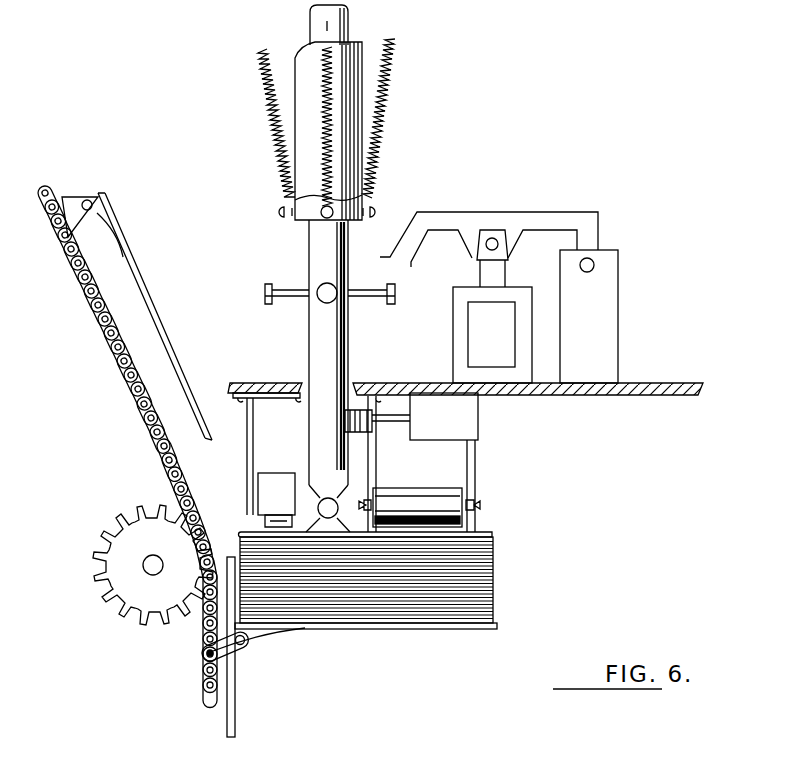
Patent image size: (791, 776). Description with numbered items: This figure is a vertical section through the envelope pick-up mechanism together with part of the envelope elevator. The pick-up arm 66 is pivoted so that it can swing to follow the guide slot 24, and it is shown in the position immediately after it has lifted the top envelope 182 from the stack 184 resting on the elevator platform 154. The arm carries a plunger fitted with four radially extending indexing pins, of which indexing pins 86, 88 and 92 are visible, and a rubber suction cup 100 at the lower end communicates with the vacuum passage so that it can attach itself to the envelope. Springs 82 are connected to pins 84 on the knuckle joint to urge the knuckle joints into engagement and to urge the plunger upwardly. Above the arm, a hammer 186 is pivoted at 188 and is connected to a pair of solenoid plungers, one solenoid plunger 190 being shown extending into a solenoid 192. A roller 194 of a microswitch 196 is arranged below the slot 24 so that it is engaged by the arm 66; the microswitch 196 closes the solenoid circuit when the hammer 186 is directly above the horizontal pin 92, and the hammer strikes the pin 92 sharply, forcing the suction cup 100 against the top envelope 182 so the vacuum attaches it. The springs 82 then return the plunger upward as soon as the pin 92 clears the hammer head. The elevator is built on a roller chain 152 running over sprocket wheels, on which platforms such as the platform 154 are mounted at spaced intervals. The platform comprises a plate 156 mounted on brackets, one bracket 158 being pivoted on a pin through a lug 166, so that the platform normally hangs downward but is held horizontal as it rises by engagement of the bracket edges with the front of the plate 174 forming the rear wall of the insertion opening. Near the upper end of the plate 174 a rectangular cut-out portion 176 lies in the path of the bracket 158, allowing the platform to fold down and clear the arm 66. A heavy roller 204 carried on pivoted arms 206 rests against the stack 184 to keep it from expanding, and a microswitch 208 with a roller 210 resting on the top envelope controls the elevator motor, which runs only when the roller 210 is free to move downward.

The guide slot 24 is at (309, 378).
The arm 66 is at (398, 198).
The springs 82 is at (270, 118).
The pins 84 is at (282, 212).
The indexing pin 86 is at (318, 286).
The indexing pin 88 is at (292, 299).
The indexing pin 92 is at (370, 299).
The suction cup 100 is at (333, 524).
The roller chain 152 is at (137, 393).
The elevator platform 154 is at (403, 643).
The plate 156 is at (455, 632).
The bracket 158 is at (262, 638).
The lug 166 is at (204, 651).
The plate 174 is at (236, 702).
The cut-out portion 176 is at (230, 576).
The top envelope 182 is at (488, 531).
The stack 184 is at (493, 578).
The hammer 186 is at (410, 263).
The pivot 188 is at (595, 265).
The solenoid plunger 190 is at (497, 270).
The solenoid 192 is at (508, 358).
The roller 194 is at (369, 432).
The microswitch 196 is at (459, 423).
The heavy roller 204 is at (426, 497).
The pivoted arms 206 is at (374, 498).
The microswitch 208 is at (258, 488).
The roller 210 is at (297, 503).